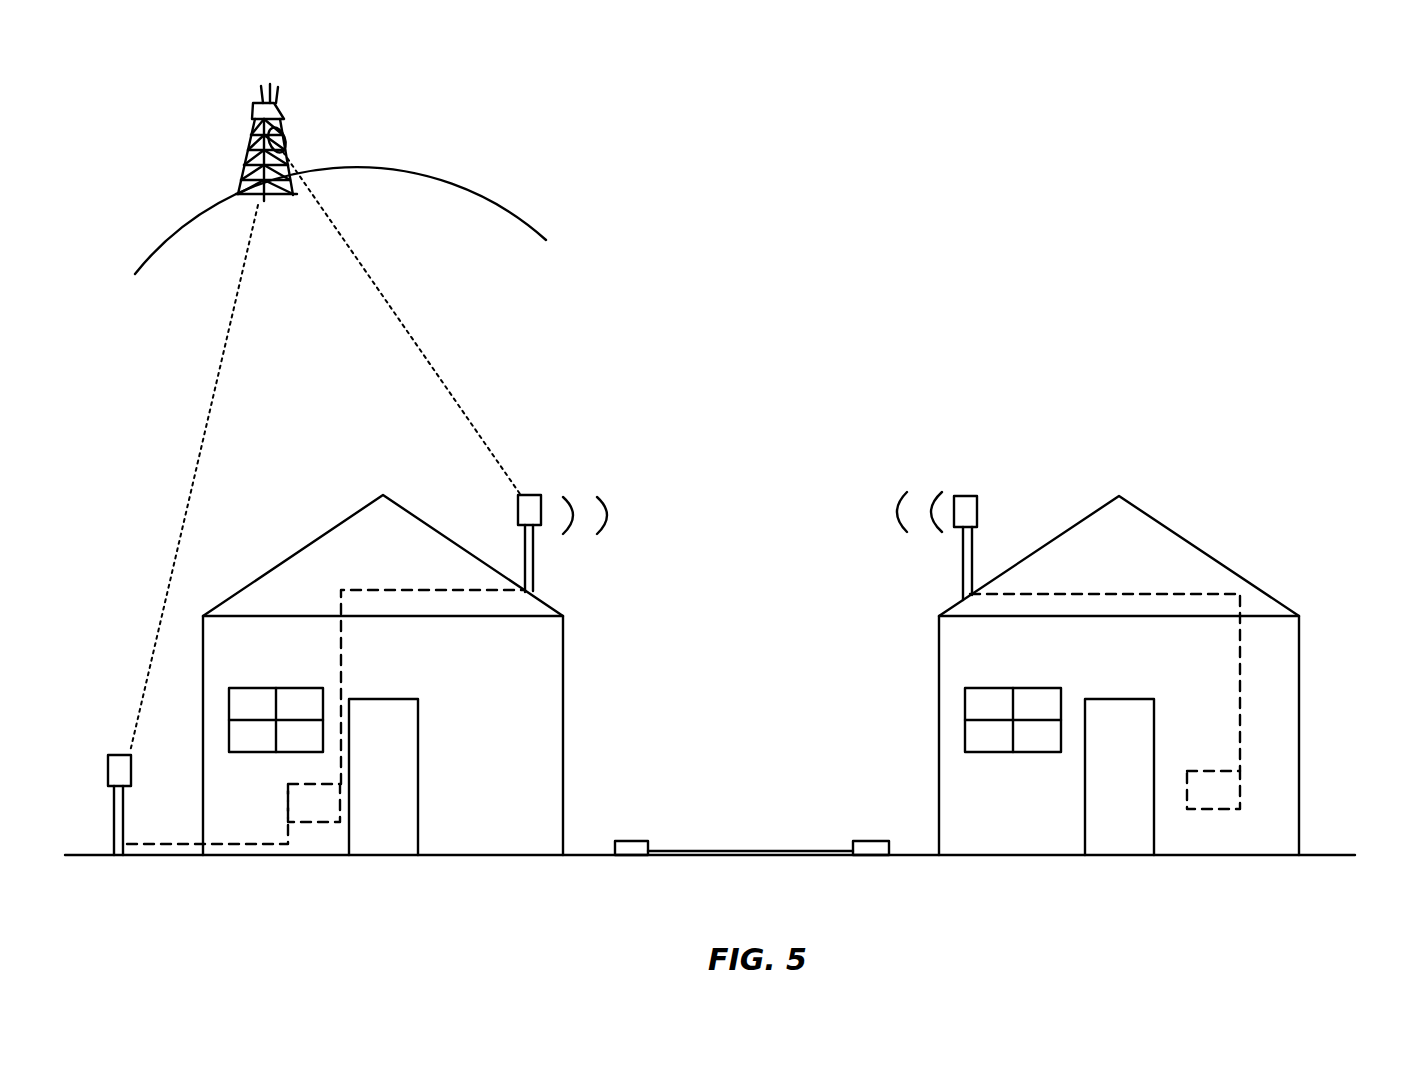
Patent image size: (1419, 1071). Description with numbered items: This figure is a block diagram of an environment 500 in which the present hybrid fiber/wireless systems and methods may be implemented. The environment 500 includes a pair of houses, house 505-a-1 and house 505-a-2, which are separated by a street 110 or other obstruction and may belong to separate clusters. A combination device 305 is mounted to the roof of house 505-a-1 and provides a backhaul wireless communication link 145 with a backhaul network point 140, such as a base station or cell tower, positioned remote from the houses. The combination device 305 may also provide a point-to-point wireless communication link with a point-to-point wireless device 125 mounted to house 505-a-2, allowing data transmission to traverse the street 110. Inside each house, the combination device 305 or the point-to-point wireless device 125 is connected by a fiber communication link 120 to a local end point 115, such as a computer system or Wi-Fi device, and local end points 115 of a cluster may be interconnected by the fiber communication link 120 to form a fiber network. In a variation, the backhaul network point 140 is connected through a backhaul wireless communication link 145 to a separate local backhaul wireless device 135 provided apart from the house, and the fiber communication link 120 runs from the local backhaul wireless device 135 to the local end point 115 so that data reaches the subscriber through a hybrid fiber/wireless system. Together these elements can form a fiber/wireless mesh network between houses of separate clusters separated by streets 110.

The environment 500 is at (757, 318).
The backhaul network point 140 is at (290, 104).
The backhaul wireless communication link 145 is at (217, 377).
The combination device 305 is at (541, 495).
The point-to-point wireless device 125 is at (977, 496).
The local backhaul wireless device 135 is at (108, 755).
The fiber communication link 120 is at (150, 846).
The local end point 115 is at (322, 813).
The street 110 is at (742, 852).
The house 505-a-1 is at (563, 678).
The house 505-a-2 is at (939, 650).